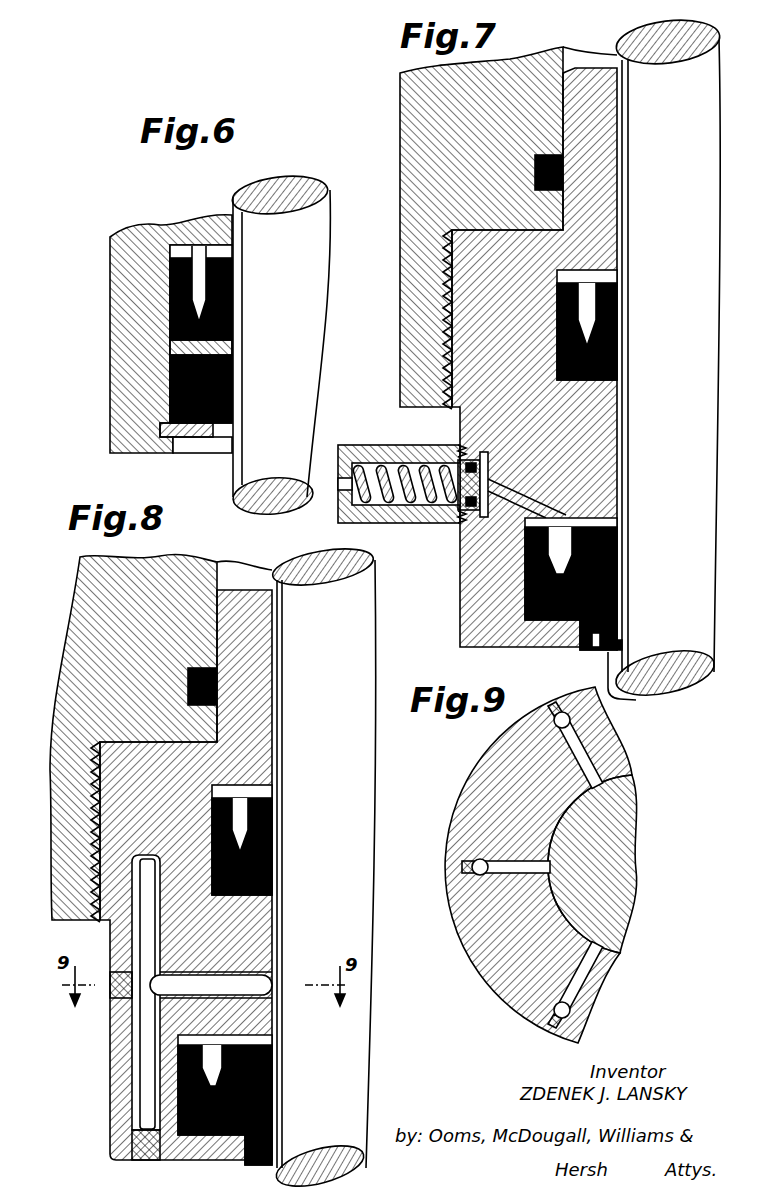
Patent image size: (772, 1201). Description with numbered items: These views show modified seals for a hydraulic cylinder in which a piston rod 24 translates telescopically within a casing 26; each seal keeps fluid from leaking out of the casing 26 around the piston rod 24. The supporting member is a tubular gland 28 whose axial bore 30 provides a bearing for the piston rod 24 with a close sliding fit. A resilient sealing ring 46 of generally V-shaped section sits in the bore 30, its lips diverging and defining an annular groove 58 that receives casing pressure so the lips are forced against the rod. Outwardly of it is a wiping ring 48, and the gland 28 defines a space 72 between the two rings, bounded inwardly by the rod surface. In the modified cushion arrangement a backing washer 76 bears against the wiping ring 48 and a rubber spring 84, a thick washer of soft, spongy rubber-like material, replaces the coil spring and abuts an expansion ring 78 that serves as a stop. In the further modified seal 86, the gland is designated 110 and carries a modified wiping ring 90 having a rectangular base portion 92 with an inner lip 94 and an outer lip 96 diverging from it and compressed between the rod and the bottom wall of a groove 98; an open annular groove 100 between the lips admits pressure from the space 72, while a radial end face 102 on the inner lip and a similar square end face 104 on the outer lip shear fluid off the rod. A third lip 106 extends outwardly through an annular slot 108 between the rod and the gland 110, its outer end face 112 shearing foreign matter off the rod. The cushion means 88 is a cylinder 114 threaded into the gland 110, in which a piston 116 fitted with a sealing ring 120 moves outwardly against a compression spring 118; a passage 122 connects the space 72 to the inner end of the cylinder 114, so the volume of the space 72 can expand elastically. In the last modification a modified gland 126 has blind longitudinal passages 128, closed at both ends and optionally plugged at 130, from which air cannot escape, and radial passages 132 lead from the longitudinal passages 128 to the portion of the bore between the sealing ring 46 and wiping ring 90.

In FIG. 6, the piston rod 24 is at (278, 185).
In FIG. 7, the piston rod 24 is at (700, 92).
In FIG. 8, the piston rod 24 is at (370, 918).
In FIG. 9, the piston rod 24 is at (618, 925).
In FIG. 8, the casing 26 is at (80, 596).
In FIG. 6, the gland 28 is at (128, 442).
In FIG. 7, the bore 30 is at (620, 448).
In FIG. 8, the bore 30 is at (275, 918).
In FIG. 9, the bore 30 is at (575, 918).
In FIG. 7, the sealing ring 46 is at (608, 324).
In FIG. 8, the sealing ring 46 is at (265, 830).
In FIG. 6, the wiping ring 48 is at (178, 328).
In FIG. 7, the annular groove 58 is at (600, 292).
In FIG. 6, the space 72 is at (225, 252).
In FIG. 7, the space 72 is at (590, 530).
In FIG. 8, the space 72 is at (268, 1037).
In FIG. 6, the backing washer 76 is at (176, 346).
In FIG. 6, the expansion ring 78 is at (196, 437).
In FIG. 6, the rubber spring 84 is at (174, 388).
In FIG. 7, the modified seal 86 is at (578, 657).
In FIG. 7, the cushion means 88 is at (345, 447).
In FIG. 7, the wiping ring 90 is at (603, 575).
In FIG. 8, the wiping ring 90 is at (258, 1097).
In FIG. 7, the base portion 92 is at (540, 600).
In FIG. 7, the inner lip 94 is at (600, 543).
In FIG. 7, the outer lip 96 is at (535, 528).
In FIG. 7, the groove 98 is at (540, 580).
In FIG. 7, the open annular groove 100 is at (575, 525).
In FIG. 7, the radial end face 102 is at (596, 512).
In FIG. 7, the square end face 104 is at (505, 518).
In FIG. 7, the third lip 106 is at (620, 645).
In FIG. 7, the annular slot 108 is at (596, 650).
In FIG. 7, the gland 110 is at (470, 638).
In FIG. 7, the outer end face 112 is at (640, 700).
In FIG. 7, the cylinder 114 is at (378, 450).
In FIG. 7, the piston 116 is at (462, 468).
In FIG. 7, the compression spring 118 is at (380, 500).
In FIG. 7, the sealing ring 120 is at (468, 462).
In FIG. 7, the passage 122 is at (486, 525).
In FIG. 8, the modified gland 126 is at (120, 1150).
In FIG. 9, the modified gland 126 is at (510, 763).
In FIG. 8, the longitudinal passages 128 is at (145, 1062).
In FIG. 9, the longitudinal passages 128 is at (570, 720).
In FIG. 8, the plug 130 is at (146, 1158).
In FIG. 8, the radial passages 132 is at (178, 987).
In FIG. 9, the radial passages 132 is at (598, 766).